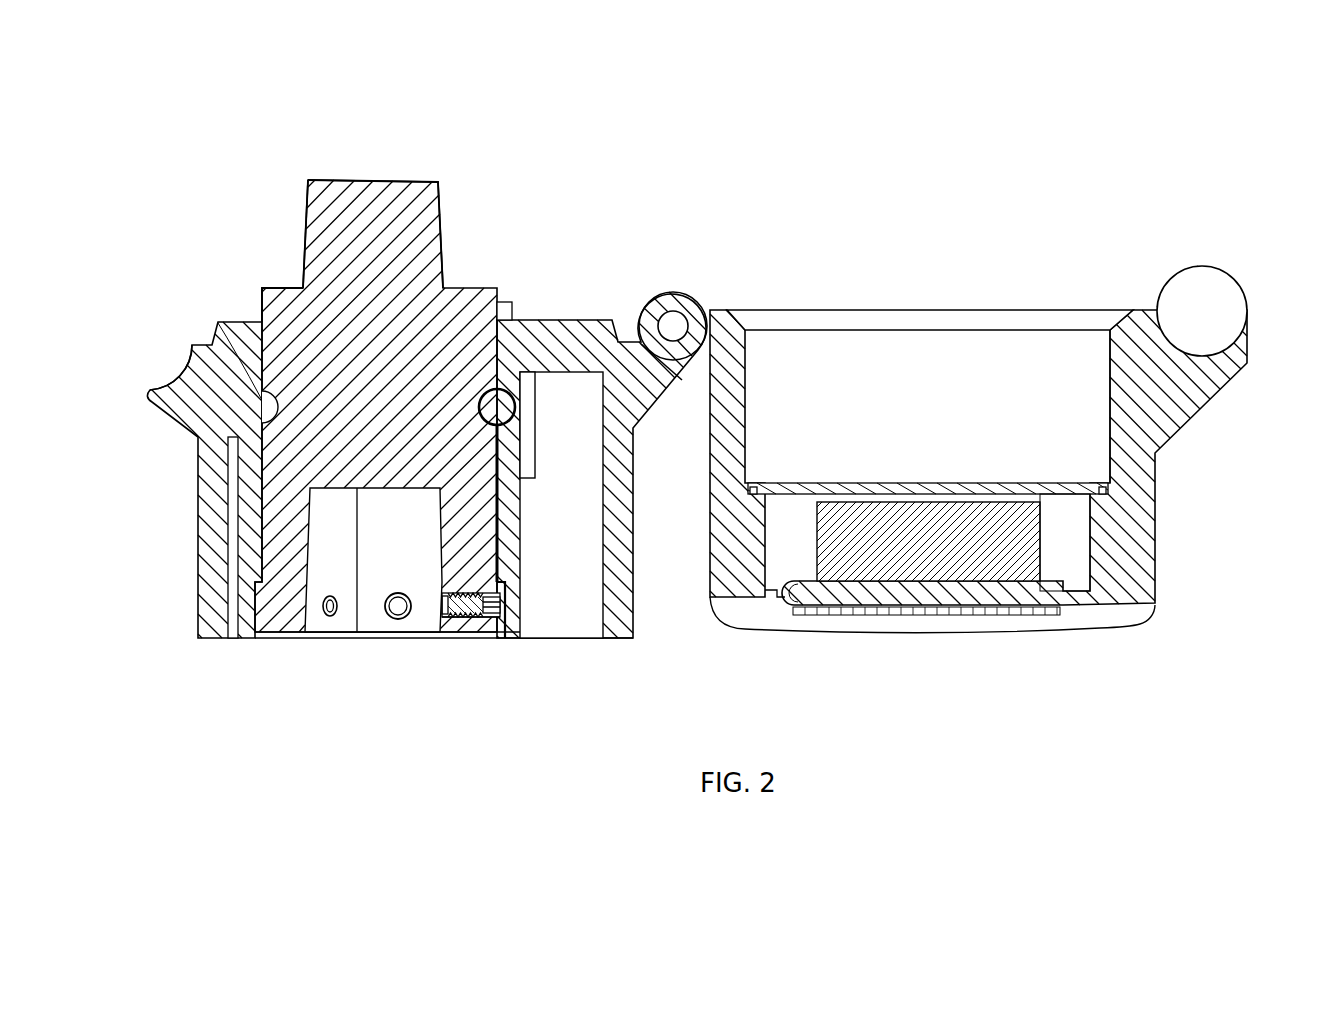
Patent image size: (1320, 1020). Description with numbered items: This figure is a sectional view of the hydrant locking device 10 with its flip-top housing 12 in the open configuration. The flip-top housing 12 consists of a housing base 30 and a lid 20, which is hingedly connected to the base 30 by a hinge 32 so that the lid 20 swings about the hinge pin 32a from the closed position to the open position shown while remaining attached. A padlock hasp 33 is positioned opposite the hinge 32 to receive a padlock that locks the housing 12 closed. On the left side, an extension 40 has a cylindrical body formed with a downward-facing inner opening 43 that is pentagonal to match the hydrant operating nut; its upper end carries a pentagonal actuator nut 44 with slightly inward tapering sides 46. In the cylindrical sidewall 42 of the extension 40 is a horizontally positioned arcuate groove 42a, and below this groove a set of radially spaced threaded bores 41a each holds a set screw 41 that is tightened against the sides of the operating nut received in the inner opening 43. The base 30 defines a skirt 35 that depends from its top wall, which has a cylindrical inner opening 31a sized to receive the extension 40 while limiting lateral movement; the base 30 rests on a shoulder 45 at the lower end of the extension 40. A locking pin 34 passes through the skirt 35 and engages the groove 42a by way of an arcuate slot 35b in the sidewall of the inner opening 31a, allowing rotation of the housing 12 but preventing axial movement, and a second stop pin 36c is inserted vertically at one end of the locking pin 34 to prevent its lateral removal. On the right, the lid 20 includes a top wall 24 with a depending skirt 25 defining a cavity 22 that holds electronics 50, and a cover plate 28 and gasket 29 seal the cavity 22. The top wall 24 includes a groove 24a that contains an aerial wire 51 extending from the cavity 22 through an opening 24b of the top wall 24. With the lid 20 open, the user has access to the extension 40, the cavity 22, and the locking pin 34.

The hydrant locking device 10 is at (1010, 111).
The flip-top housing 12 is at (1115, 158).
The lid 20 is at (1212, 435).
The cavity 22 is at (1060, 512).
The top wall 24 is at (1040, 631).
The groove 24a is at (1112, 620).
The opening 24b is at (772, 597).
The skirt 25 is at (1140, 487).
The cover plate 28 is at (838, 472).
The gasket 29 is at (758, 492).
The housing base 30 is at (165, 505).
The inner opening 31a is at (500, 580).
The hinge 32 is at (665, 290).
The hinge pin 32a is at (678, 322).
The padlock hasp 33 is at (155, 358).
The locking pin 34 is at (502, 402).
The skirt 35 is at (210, 548).
The arcuate shaped slot 35b is at (528, 462).
The second stop pin 36c is at (505, 303).
The extension 40 is at (285, 206).
The set screw 41 is at (330, 612).
The threaded bore 41a is at (335, 598).
The cylindrical sidewall 42 is at (262, 298).
The arcuate shaped groove 42a is at (220, 323).
The inner opening 43 is at (372, 628).
The actuator nut 44 is at (452, 208).
The shoulder 45 is at (505, 588).
The inward tapering sides 46 is at (303, 235).
The electronics 50 is at (1025, 540).
The aerial wire 51 is at (935, 614).